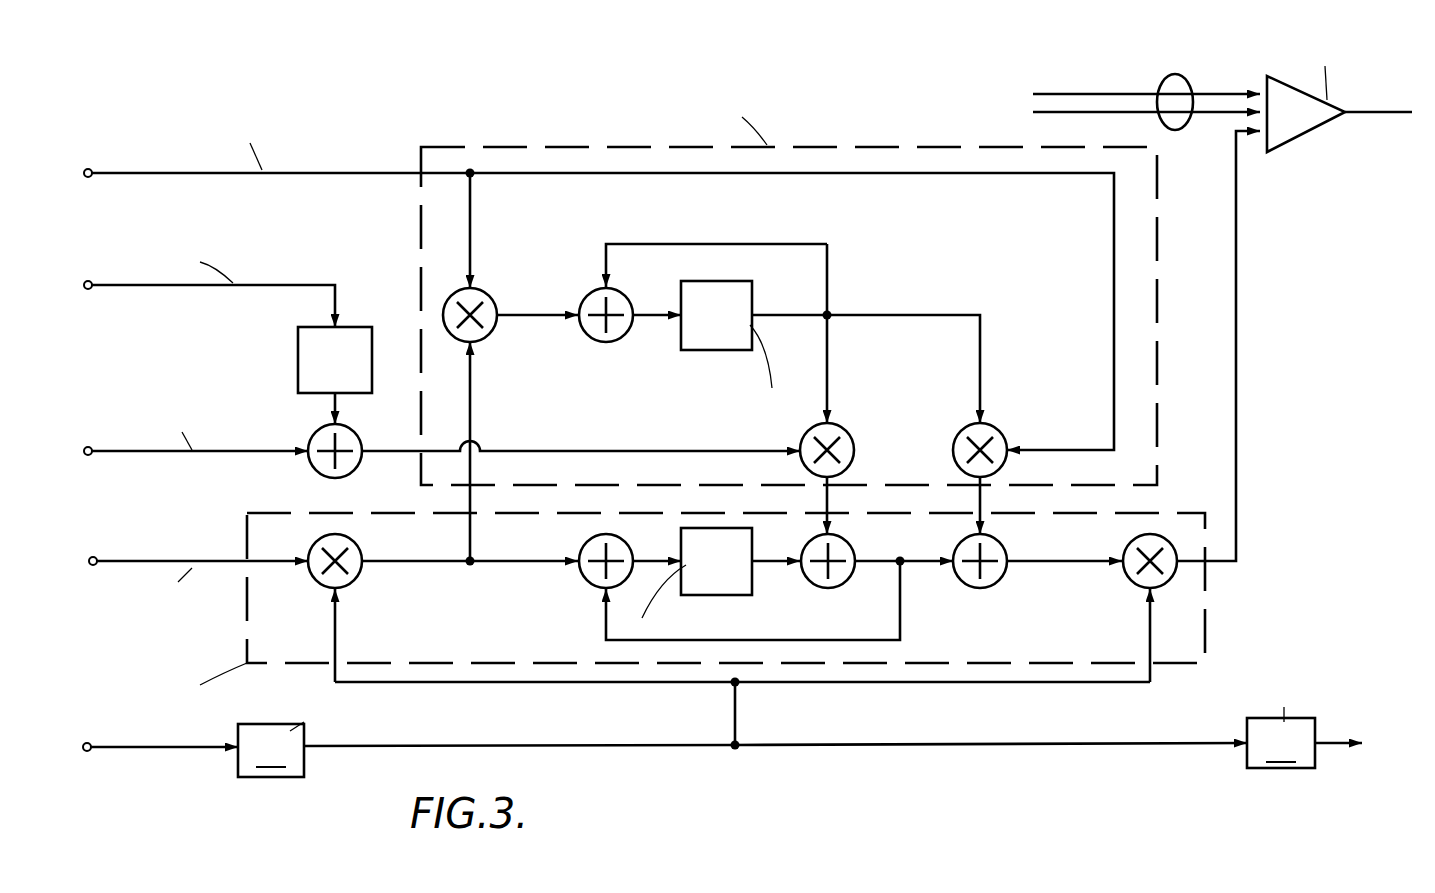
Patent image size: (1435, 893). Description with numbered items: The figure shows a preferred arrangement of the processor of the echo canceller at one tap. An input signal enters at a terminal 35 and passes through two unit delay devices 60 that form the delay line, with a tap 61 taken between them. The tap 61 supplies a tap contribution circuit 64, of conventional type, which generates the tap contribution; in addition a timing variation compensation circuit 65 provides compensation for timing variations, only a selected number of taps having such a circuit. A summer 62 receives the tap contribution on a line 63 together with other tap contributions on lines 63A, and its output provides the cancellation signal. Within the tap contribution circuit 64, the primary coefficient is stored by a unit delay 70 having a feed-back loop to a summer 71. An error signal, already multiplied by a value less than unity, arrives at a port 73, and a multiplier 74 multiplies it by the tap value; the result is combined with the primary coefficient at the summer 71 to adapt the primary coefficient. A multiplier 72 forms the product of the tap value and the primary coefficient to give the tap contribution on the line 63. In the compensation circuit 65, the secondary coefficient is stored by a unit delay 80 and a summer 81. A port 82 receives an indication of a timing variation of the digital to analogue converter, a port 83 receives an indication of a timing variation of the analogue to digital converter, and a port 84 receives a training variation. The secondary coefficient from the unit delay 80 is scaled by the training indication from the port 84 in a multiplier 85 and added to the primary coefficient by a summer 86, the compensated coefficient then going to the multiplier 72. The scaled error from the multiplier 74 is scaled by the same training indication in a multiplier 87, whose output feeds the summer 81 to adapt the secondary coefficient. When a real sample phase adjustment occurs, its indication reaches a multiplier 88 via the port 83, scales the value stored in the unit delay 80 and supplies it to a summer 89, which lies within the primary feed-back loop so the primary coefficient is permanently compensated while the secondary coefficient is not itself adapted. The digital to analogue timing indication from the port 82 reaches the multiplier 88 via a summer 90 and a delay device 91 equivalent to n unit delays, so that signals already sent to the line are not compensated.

The input terminal 35 is at (87, 751).
The unit delay device 60 is at (800, 733).
The tap 61 is at (735, 715).
The summer 62 is at (1302, 127).
The line 63 is at (1236, 318).
The lines 63A is at (1183, 75).
The tap contribution circuit 64 is at (247, 650).
The timing variation compensation circuit 65 is at (608, 146).
The unit delay 70 is at (745, 595).
The summer 71 is at (585, 575).
The multiplier 72 is at (1128, 575).
The port 73 is at (93, 565).
The multiplier 74 is at (355, 577).
The unit delay 80 is at (722, 351).
The summer 81 is at (603, 343).
The port 82 is at (88, 281).
The port 83 is at (88, 447).
The port 84 is at (88, 169).
The multiplier 85 is at (1000, 438).
The summer 86 is at (995, 548).
The multiplier 87 is at (490, 295).
The multiplier 88 is at (845, 440).
The summer 89 is at (848, 545).
The summer 90 is at (354, 432).
The delay device 91 is at (372, 332).